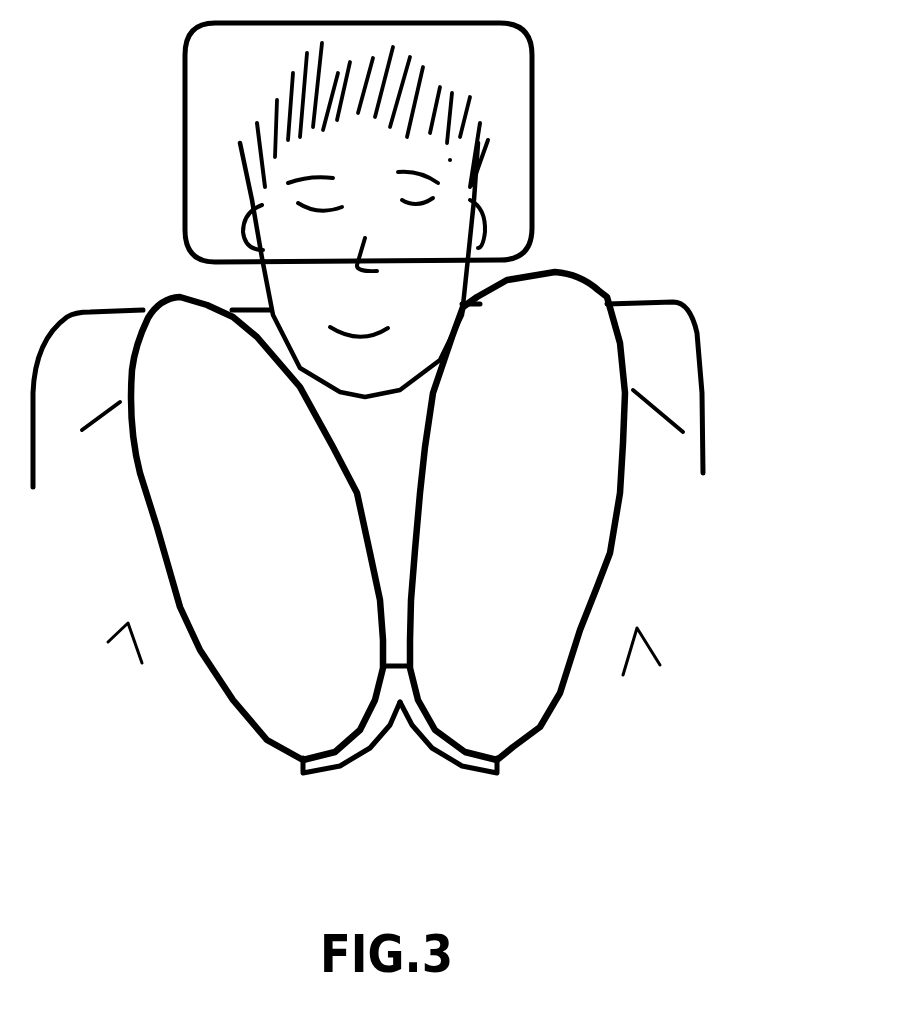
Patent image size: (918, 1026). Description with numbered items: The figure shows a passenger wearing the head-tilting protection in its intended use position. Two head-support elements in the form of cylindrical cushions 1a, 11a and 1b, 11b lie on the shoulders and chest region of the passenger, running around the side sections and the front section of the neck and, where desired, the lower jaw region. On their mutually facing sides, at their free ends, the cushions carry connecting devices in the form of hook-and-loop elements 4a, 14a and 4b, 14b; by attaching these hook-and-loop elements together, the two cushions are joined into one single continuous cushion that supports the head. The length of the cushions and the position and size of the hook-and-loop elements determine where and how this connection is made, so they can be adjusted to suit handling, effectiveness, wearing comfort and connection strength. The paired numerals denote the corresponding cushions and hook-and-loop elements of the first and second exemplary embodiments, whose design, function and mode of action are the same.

The cushion 1a is at (197, 528).
The cushion 11a is at (220, 622).
The cushion 1b is at (621, 516).
The cushion 11b is at (585, 531).
The hook-and-loop element 4a is at (304, 789).
The hook-and-loop element 14a is at (343, 773).
The hook-and-loop element 4b is at (536, 789).
The hook-and-loop element 14b is at (473, 773).